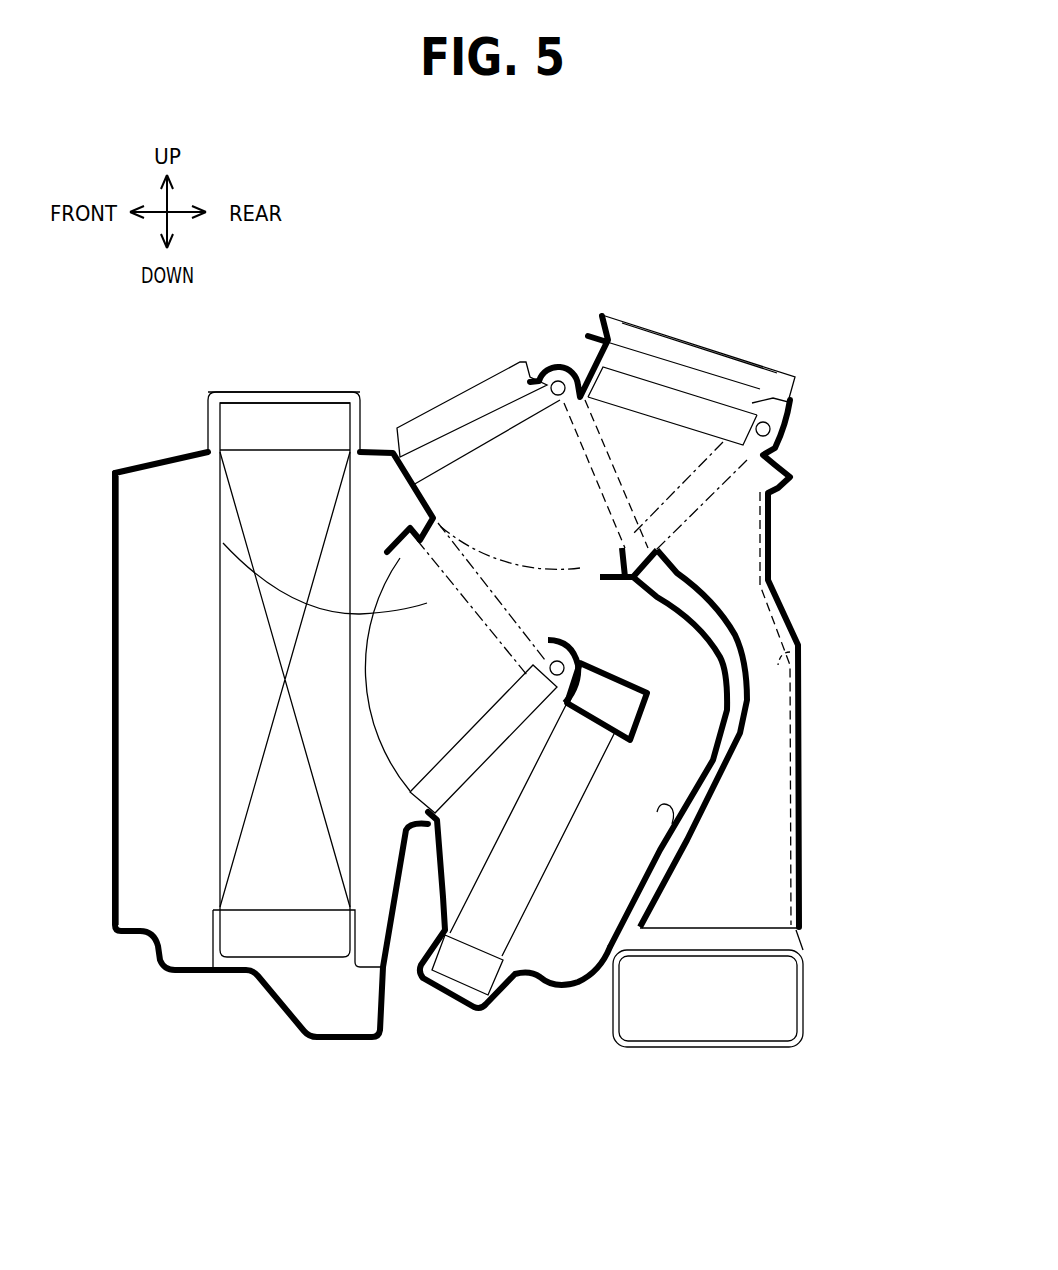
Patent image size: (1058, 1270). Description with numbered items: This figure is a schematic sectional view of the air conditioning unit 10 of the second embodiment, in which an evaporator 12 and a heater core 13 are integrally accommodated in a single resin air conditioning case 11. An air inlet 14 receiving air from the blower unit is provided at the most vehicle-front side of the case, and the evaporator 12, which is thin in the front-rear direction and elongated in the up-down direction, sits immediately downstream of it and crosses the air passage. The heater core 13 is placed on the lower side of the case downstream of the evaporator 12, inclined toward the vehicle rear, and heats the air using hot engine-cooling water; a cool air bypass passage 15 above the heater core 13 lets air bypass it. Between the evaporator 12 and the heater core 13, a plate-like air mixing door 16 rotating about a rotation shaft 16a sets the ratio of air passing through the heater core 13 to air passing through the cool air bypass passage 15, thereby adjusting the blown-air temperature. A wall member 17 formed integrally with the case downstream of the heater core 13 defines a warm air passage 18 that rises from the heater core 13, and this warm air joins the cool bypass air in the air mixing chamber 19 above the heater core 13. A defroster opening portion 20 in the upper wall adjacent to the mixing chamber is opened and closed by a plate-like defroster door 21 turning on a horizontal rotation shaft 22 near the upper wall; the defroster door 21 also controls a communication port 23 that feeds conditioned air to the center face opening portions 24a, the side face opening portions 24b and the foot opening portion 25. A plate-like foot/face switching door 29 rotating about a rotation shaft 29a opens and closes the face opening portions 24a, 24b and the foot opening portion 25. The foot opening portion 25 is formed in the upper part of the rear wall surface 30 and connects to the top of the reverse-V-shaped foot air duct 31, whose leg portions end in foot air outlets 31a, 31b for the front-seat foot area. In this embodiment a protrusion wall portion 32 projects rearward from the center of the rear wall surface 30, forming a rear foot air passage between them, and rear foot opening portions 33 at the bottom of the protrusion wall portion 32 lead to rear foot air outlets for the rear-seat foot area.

The air conditioning unit 10 is at (397, 396).
The air conditioning case 11 is at (251, 392).
The evaporator 12 is at (273, 860).
The heater core 13 is at (523, 705).
The air inlet 14 is at (160, 567).
The cool air bypass passage 15 is at (220, 542).
The air mixing door 16 is at (440, 760).
The rotation shaft 16a is at (520, 755).
The wall member 17 is at (660, 817).
The warm air passage 18 is at (620, 797).
The air mixing chamber 19 is at (503, 563).
The defroster opening portion 20 is at (493, 390).
The defroster door 21 is at (473, 433).
The rotation shaft 22 is at (560, 368).
The communication port 23 is at (592, 412).
The center face opening portions 24a is at (677, 397).
The side face opening portions 24b is at (672, 421).
The foot opening portion 25 is at (717, 518).
The foot/face switching door 29 is at (610, 405).
The rotation shaft 29a is at (777, 432).
The rear wall surface 30 is at (733, 640).
The foot air duct 31 is at (805, 707).
The foot air outlet 31a is at (723, 928).
The foot air outlet 31b is at (799, 940).
The protrusion wall portion 32 is at (792, 672).
The rear foot opening portions 33 is at (680, 1000).